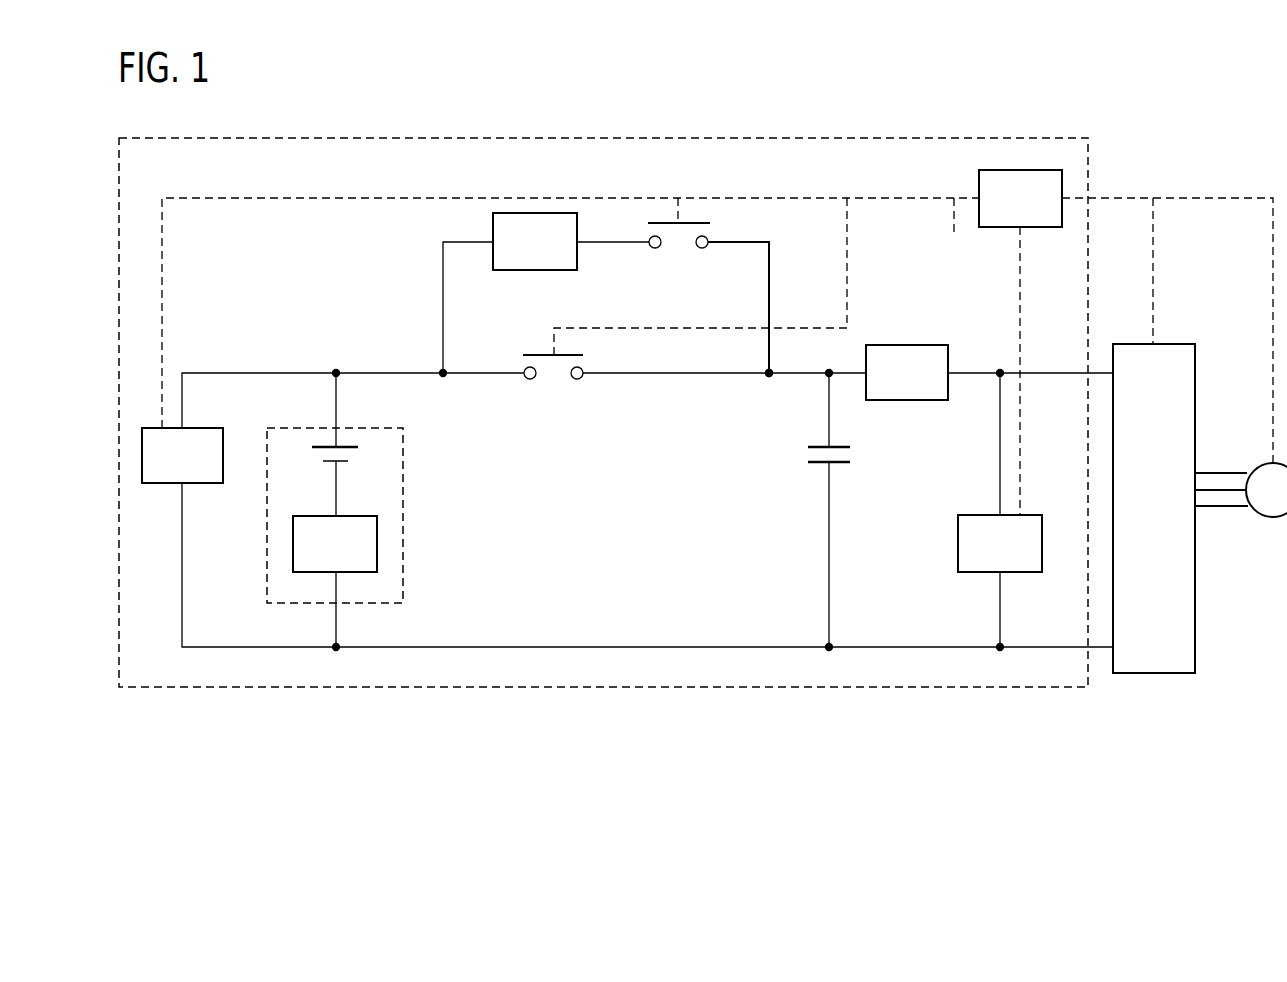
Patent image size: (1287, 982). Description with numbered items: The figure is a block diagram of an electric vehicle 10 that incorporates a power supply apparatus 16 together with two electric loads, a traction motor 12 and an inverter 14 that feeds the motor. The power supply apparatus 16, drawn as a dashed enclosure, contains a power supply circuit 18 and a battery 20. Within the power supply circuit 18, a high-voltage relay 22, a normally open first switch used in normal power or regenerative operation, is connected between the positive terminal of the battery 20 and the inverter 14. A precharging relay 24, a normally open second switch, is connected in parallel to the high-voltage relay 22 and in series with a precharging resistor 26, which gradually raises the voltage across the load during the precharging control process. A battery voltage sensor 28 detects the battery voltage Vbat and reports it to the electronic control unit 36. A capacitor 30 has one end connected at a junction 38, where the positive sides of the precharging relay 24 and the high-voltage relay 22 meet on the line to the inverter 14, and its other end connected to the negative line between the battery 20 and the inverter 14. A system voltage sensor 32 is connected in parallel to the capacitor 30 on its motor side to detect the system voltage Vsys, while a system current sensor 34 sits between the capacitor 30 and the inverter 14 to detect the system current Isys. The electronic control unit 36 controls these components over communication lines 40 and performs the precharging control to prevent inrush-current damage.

The electric vehicle 10 is at (1193, 135).
The traction motor 12 is at (1273, 517).
The inverter 14 is at (1157, 673).
The power supply apparatus 16 is at (573, 688).
The power supply circuit 18 is at (413, 352).
The battery 20 is at (403, 520).
The high-voltage relay 22 is at (538, 353).
The precharging relay 24 is at (703, 223).
The precharging resistor 26 is at (493, 226).
The battery voltage sensor 28 is at (205, 428).
The capacitor 30 is at (818, 466).
The system voltage sensor 32 is at (958, 541).
The system current sensor 34 is at (892, 345).
The electronic control unit 36 is at (997, 170).
The junction 38 is at (768, 378).
The communication lines 40 is at (1018, 237).